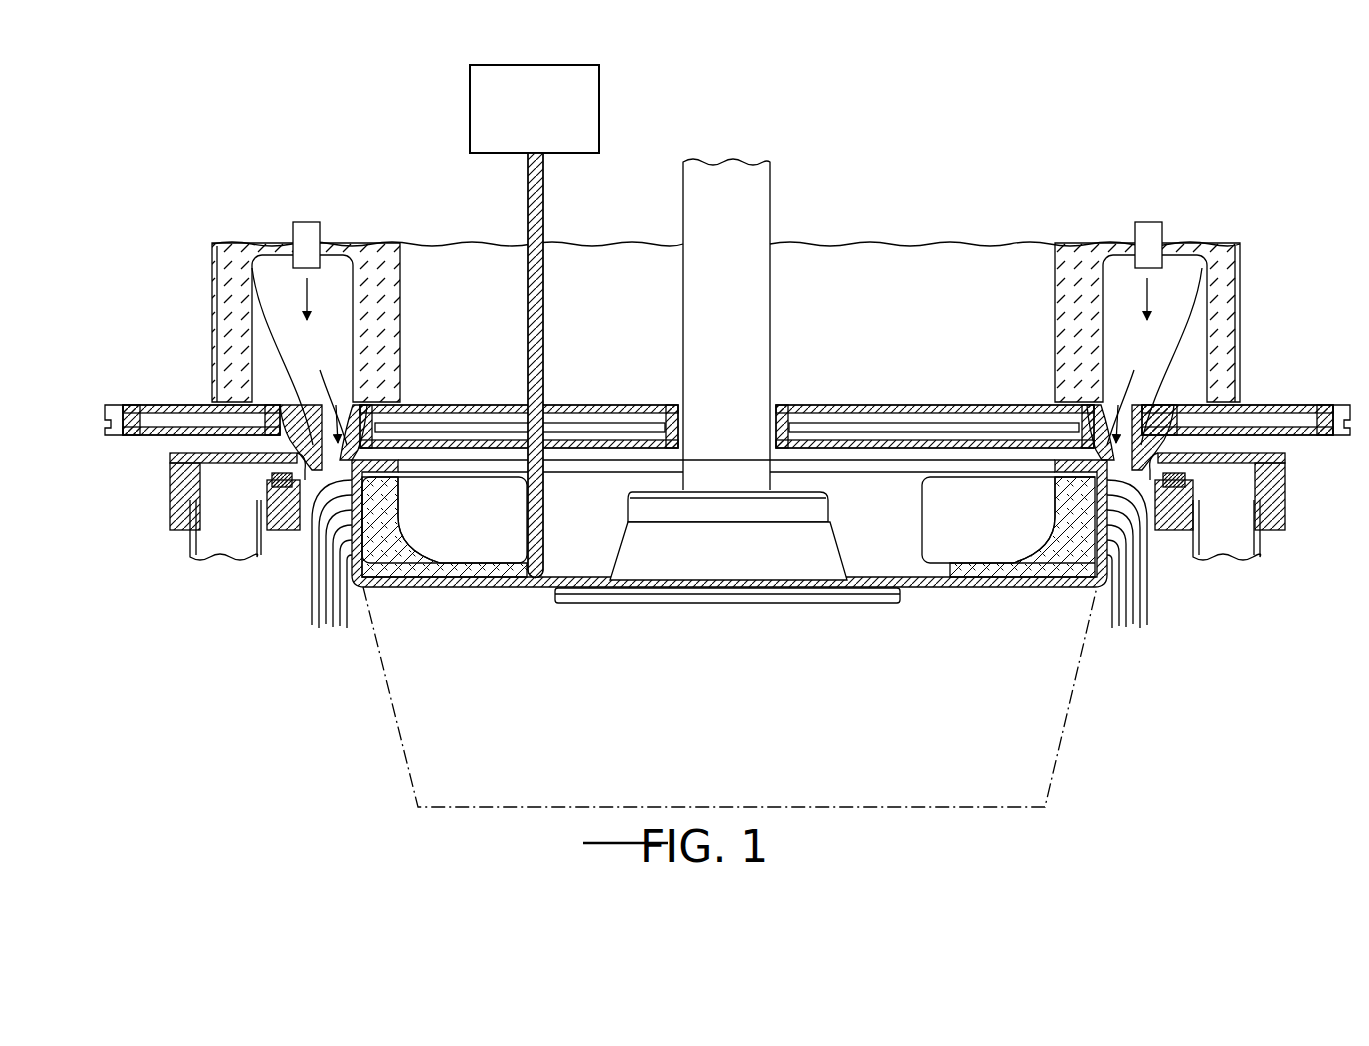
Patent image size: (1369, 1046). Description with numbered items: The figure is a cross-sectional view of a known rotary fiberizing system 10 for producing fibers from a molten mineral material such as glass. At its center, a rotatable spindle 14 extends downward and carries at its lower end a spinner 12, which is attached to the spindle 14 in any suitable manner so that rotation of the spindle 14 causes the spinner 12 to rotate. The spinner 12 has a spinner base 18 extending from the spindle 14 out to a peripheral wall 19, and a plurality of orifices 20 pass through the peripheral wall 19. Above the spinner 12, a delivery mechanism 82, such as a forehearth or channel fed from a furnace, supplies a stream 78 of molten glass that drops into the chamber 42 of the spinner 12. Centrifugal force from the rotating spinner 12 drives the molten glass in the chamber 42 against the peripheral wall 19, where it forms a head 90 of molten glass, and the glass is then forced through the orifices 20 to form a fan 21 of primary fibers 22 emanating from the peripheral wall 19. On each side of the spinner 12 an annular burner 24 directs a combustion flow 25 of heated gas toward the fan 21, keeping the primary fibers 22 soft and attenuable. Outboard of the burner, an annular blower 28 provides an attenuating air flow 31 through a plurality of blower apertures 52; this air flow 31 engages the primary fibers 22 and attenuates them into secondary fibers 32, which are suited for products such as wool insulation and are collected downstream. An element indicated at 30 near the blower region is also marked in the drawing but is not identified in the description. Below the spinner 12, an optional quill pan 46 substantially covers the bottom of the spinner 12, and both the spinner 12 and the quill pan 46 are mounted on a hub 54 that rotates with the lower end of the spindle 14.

The fiberizing system 10 is at (1092, 175).
The spinner 12 is at (440, 597).
The spindle 14 is at (735, 160).
The spinner base 18 is at (518, 590).
The peripheral wall 19 is at (370, 560).
The orifices 20 is at (372, 492).
The fan 21 is at (350, 455).
The primary fibers 22 is at (327, 562).
The annular burner 24 is at (320, 232).
The combustion flow 25 is at (727, 356).
The annular blower 28 is at (170, 497).
The support plate 30 is at (205, 442).
The attenuating air flow 31 is at (290, 469).
The secondary fibers 32 is at (340, 604).
The chamber 42 is at (592, 518).
The quill pan 46 is at (1080, 755).
The blower apertures 52 is at (288, 440).
The hub 54 is at (712, 603).
The stream 78 is at (543, 306).
The delivery mechanism 82 is at (470, 103).
The head 90 is at (418, 541).